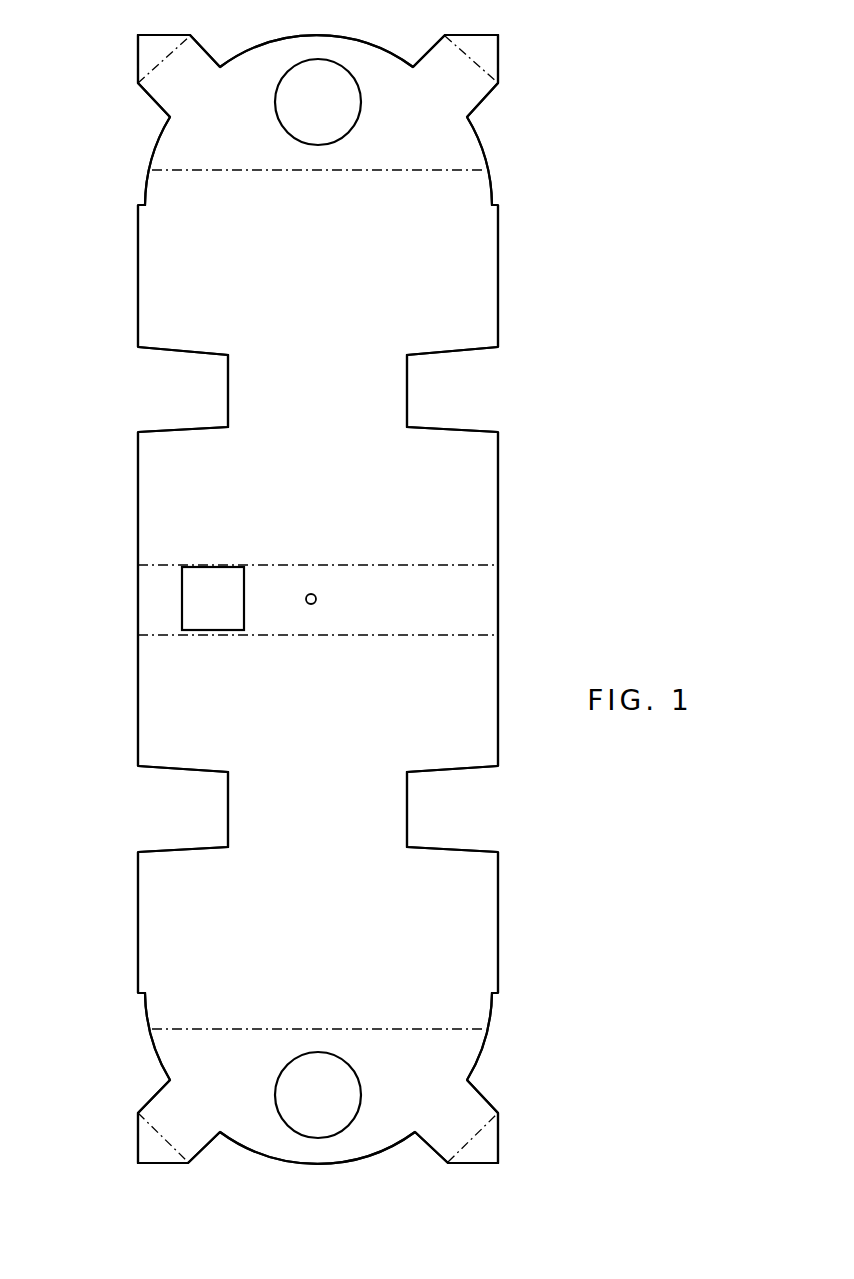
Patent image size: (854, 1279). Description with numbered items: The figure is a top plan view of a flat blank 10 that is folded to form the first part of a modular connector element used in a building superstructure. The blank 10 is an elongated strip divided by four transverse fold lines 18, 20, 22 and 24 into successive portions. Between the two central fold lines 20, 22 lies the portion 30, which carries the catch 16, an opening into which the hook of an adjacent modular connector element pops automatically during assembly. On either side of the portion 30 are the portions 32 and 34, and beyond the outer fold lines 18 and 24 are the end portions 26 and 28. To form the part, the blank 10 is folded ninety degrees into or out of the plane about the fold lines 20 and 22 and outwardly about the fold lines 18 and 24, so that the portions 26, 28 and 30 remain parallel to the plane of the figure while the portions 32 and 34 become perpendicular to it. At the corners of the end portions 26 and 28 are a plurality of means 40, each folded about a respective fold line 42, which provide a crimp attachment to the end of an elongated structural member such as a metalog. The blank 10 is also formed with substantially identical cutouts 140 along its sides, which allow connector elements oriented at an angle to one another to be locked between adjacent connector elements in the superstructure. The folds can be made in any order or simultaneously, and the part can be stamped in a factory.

The flat blank 10 is at (547, 487).
The catch 16 is at (183, 600).
The fold line 18 is at (308, 172).
The fold line 20 is at (320, 563).
The fold line 22 is at (295, 637).
The fold line 24 is at (273, 1000).
The portion 26 is at (463, 143).
The portion 28 is at (463, 1048).
The portion 30 is at (480, 617).
The portion 32 is at (485, 323).
The portion 34 is at (480, 930).
The means for crimp attachment 40 is at (147, 57).
The fold line 42 is at (178, 68).
The cutout 140 is at (172, 400).